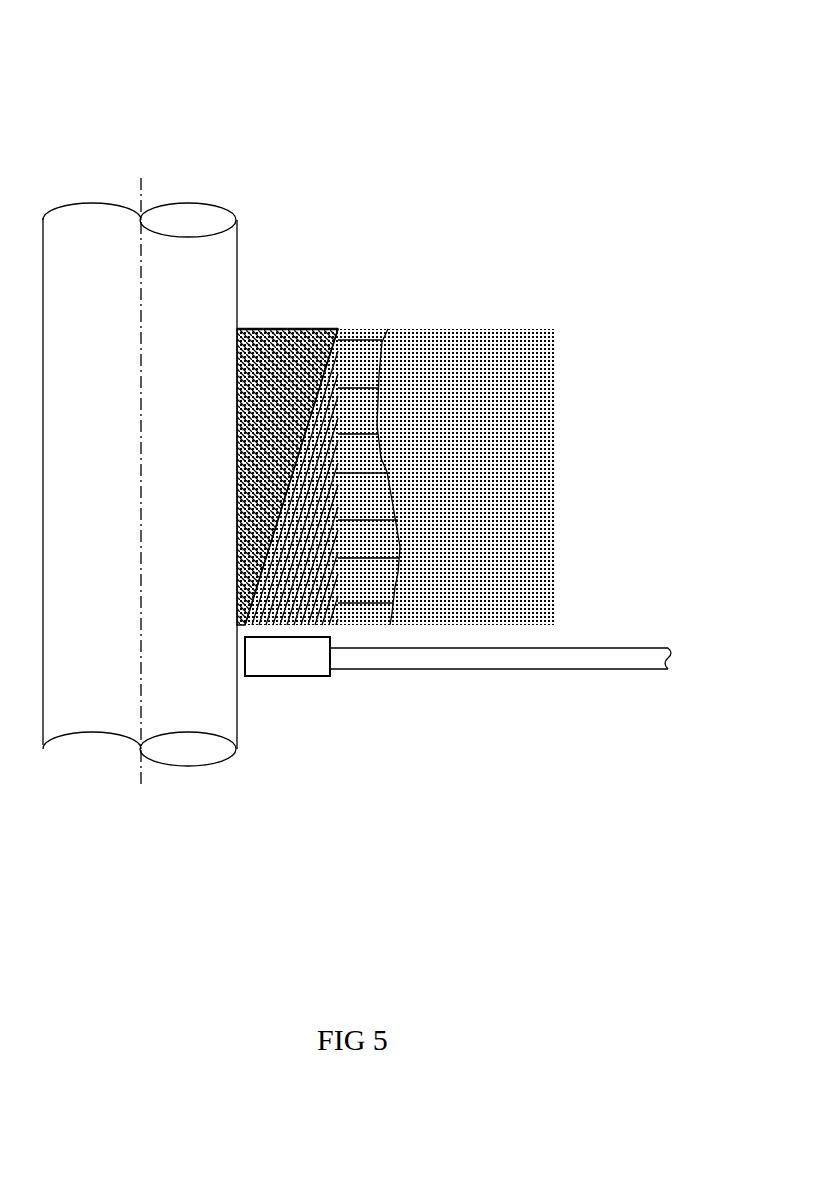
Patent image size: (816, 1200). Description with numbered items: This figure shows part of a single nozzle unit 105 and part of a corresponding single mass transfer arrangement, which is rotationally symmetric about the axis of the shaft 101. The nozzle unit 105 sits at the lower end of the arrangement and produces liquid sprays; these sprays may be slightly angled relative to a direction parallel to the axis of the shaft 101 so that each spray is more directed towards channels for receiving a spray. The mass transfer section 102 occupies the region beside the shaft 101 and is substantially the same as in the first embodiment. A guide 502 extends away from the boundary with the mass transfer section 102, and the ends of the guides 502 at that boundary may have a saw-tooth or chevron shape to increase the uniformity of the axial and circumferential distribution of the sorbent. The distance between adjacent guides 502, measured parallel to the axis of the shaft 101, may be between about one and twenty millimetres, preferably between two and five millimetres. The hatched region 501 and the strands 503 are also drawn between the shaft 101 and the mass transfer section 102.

The shaft 101 is at (183, 305).
The mass transfer section 102 is at (437, 357).
The nozzle unit 105 is at (260, 660).
The compressed wedge region 501 is at (303, 357).
The guides 502 is at (327, 573).
The fiber strands 503 is at (280, 590).